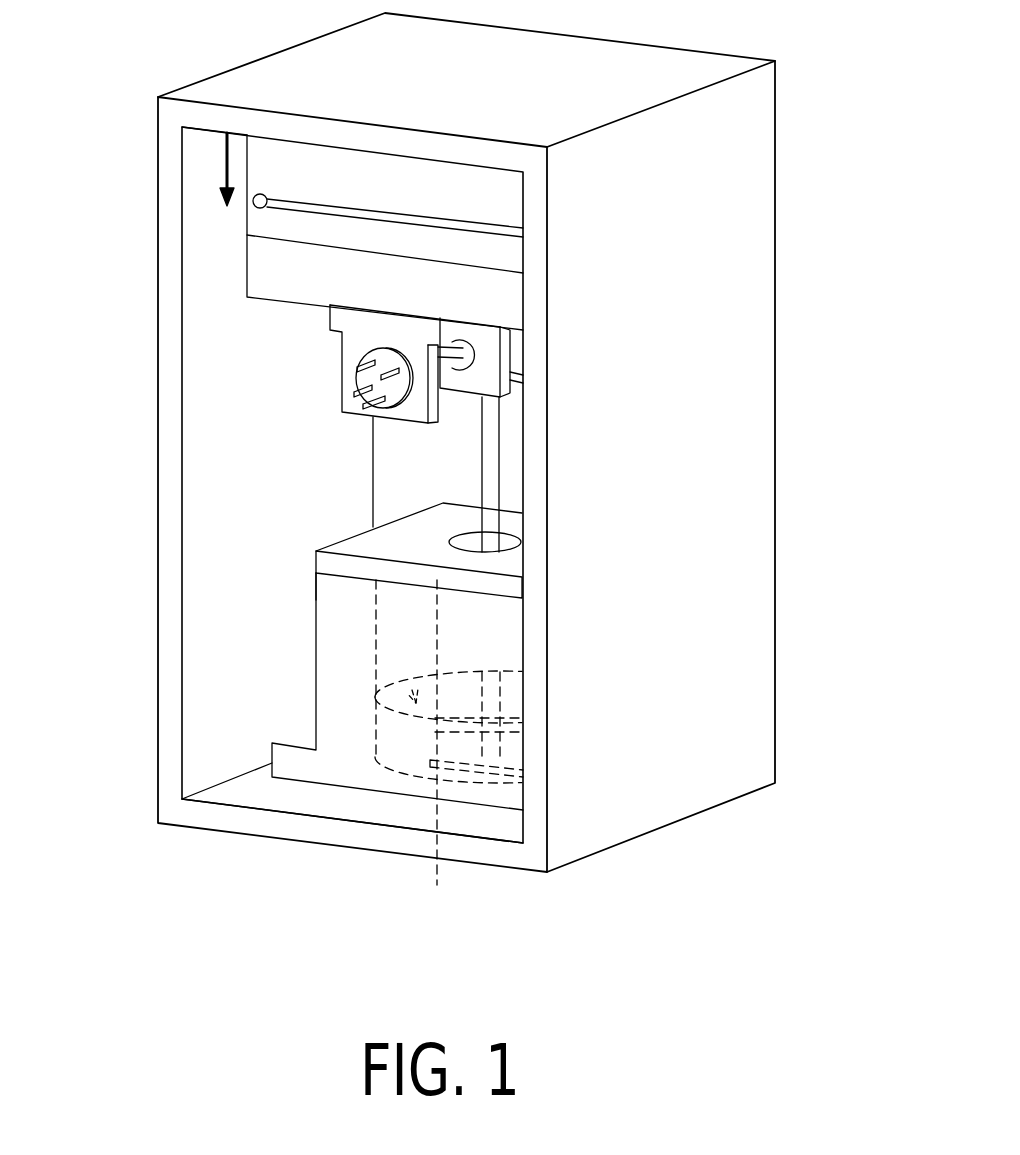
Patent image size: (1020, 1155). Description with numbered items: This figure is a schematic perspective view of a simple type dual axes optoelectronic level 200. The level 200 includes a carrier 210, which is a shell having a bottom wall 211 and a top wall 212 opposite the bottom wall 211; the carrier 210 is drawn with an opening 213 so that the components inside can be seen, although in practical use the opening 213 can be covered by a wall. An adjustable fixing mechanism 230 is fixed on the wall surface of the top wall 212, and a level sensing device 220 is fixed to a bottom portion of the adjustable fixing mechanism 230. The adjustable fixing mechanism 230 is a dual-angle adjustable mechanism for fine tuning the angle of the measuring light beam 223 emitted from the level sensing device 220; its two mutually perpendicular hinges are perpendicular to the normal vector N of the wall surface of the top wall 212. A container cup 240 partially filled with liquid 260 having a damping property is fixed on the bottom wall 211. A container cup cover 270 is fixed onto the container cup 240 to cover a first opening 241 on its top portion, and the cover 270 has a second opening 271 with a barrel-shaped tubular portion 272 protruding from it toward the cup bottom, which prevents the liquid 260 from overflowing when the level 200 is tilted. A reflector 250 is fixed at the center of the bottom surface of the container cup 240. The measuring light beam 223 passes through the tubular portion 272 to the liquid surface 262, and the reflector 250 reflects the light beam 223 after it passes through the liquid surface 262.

The dual axes optoelectronic level 200 is at (885, 900).
The carrier 210 is at (757, 127).
The bottom wall 211 is at (275, 792).
The top wall 212 is at (208, 132).
The opening 213 is at (213, 437).
The level sensing device 220 is at (253, 278).
The measuring light beam 223 is at (492, 452).
The adjustable fixing mechanism 230 is at (253, 224).
The container cup 240 is at (337, 713).
The first opening 241 is at (350, 575).
The reflector 250 is at (525, 765).
The liquid 260 is at (448, 681).
The liquid surface 262 is at (443, 758).
The container cup cover 270 is at (337, 563).
The second opening 271 is at (513, 542).
The tubular portion 272 is at (507, 622).
The normal vector N is at (232, 153).